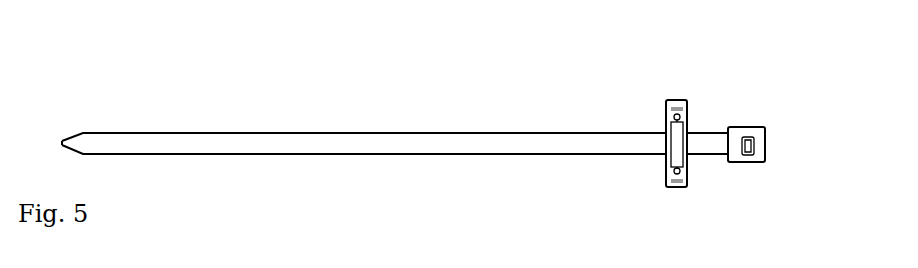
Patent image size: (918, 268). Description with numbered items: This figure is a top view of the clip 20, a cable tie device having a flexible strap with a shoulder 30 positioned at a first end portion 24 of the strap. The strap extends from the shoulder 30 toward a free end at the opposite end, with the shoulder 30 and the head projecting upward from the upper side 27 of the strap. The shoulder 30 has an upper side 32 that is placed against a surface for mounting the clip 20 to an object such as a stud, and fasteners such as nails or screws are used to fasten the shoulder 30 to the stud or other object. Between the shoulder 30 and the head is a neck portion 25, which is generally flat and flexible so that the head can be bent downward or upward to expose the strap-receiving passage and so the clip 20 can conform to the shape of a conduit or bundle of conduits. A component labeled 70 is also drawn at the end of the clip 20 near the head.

The clip 20 is at (277, 62).
The upper side 27 is at (186, 143).
The first end portion 24 is at (767, 208).
The neck portion 25 is at (706, 120).
The upper side 32 is at (662, 120).
The shoulder 30 is at (660, 158).
The end cap 70 is at (748, 112).